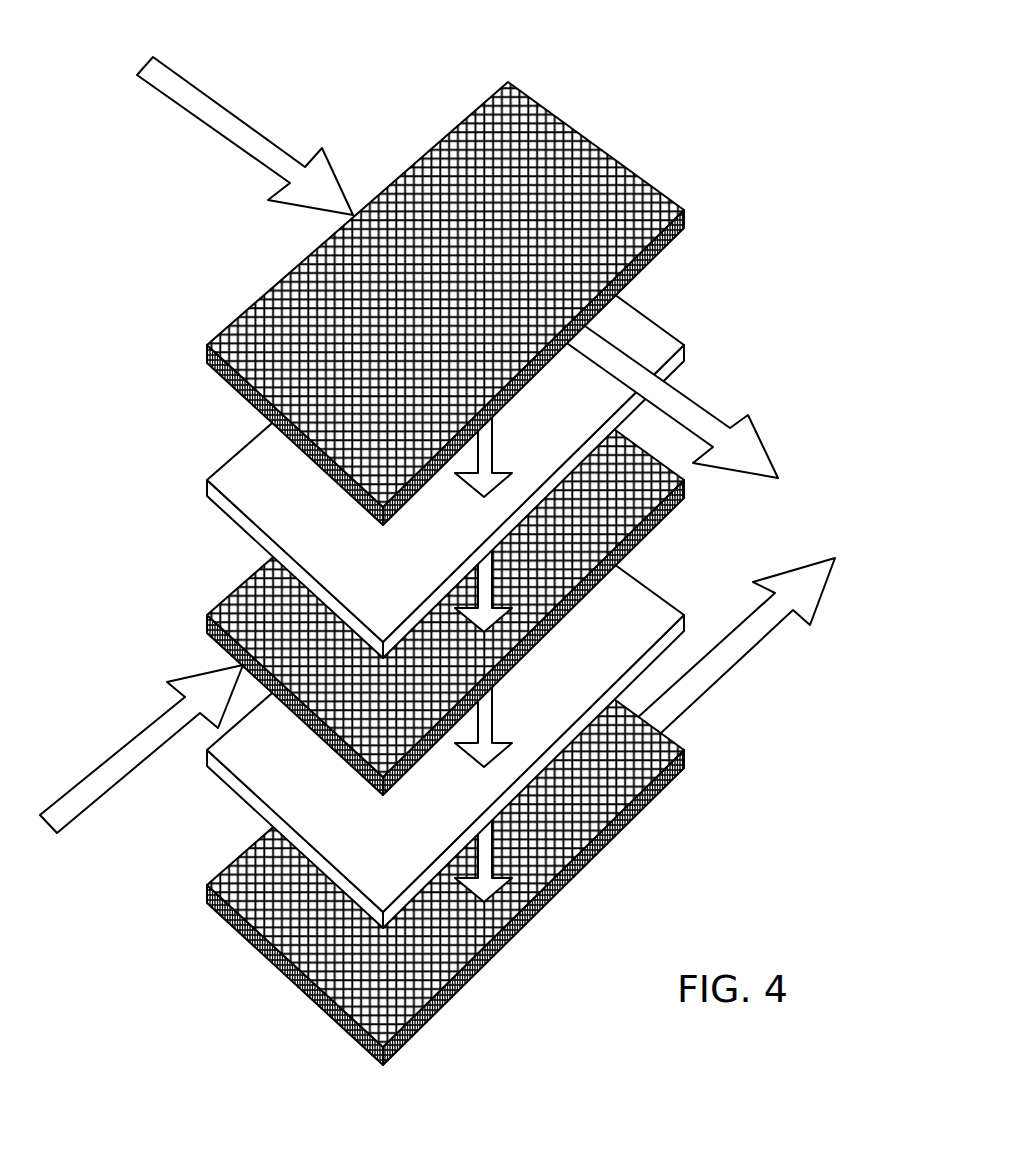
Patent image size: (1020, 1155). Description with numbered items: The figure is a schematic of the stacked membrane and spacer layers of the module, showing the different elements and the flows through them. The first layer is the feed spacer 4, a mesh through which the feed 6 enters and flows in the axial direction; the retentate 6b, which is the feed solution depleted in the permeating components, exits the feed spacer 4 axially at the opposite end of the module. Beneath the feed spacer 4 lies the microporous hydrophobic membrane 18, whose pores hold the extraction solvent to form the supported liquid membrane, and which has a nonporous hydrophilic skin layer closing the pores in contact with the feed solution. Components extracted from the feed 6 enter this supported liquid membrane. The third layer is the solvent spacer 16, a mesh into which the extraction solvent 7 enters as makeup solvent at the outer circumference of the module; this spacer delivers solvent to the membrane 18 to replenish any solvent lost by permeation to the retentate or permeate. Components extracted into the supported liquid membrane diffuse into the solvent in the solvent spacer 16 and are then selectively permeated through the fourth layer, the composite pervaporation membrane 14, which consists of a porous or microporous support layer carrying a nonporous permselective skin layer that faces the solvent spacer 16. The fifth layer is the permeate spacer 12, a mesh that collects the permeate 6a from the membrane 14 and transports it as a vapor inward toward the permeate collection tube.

The feed spacer 4 is at (207, 347).
The feed 6 is at (213, 130).
The permeate 6a is at (723, 675).
The retentate 6b is at (695, 402).
The extraction solvent 7 is at (163, 713).
The permeate spacer 12 is at (207, 902).
The composite pervaporation membrane 14 is at (263, 813).
The solvent spacer 16 is at (207, 615).
The microporous hydrophobic membrane 18 is at (207, 482).